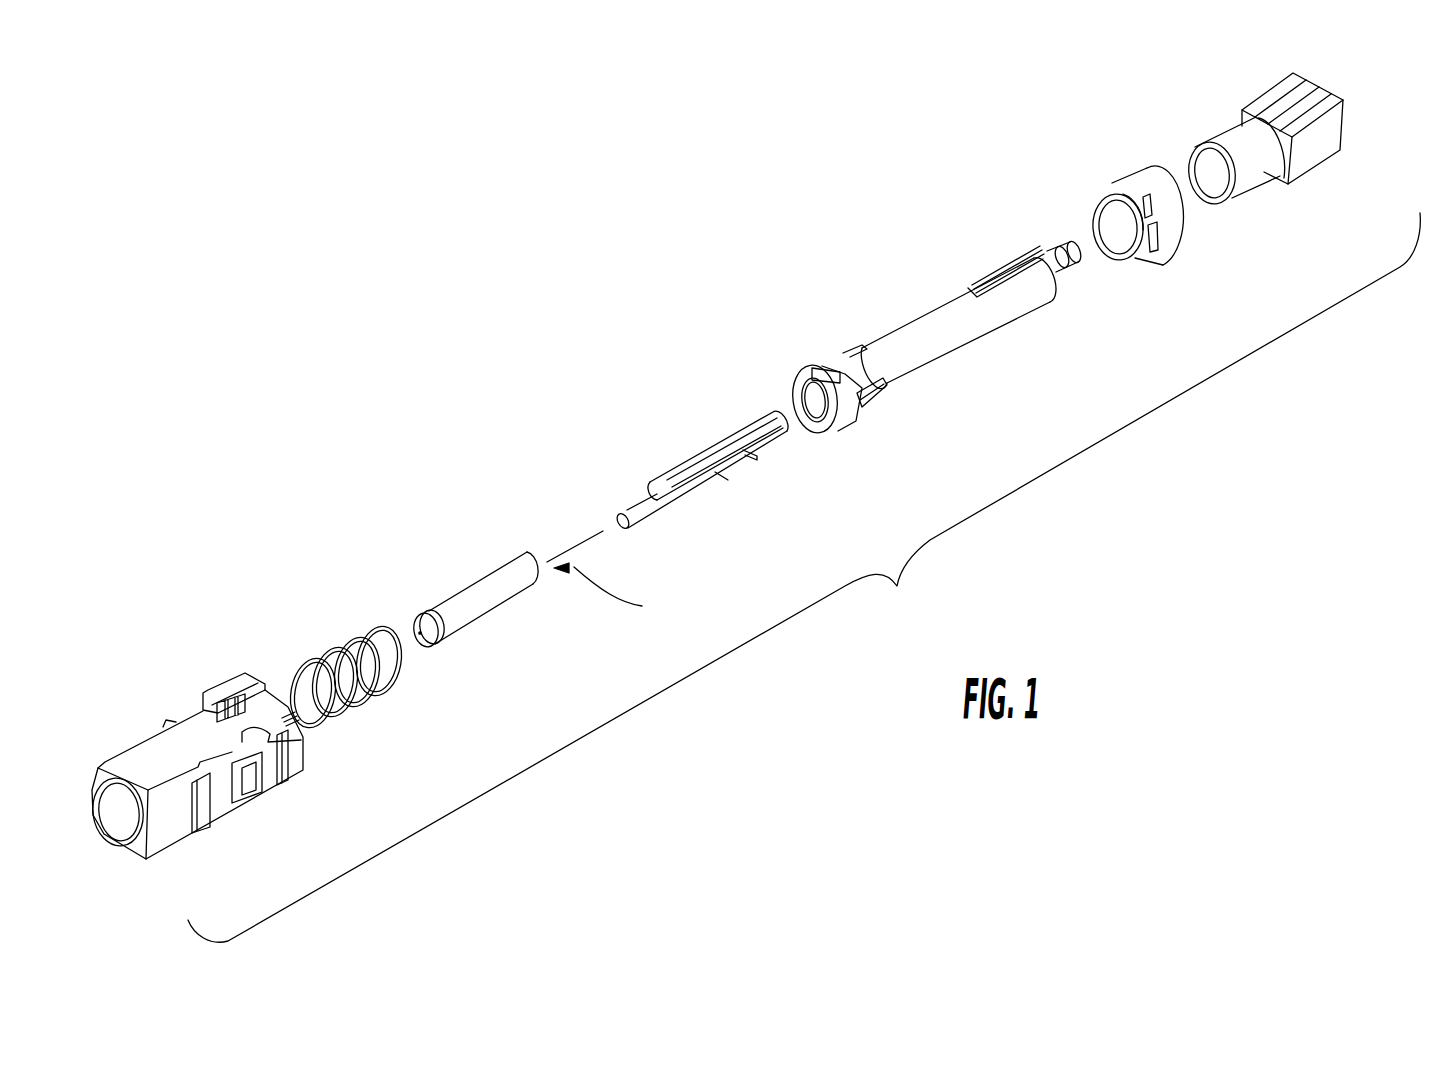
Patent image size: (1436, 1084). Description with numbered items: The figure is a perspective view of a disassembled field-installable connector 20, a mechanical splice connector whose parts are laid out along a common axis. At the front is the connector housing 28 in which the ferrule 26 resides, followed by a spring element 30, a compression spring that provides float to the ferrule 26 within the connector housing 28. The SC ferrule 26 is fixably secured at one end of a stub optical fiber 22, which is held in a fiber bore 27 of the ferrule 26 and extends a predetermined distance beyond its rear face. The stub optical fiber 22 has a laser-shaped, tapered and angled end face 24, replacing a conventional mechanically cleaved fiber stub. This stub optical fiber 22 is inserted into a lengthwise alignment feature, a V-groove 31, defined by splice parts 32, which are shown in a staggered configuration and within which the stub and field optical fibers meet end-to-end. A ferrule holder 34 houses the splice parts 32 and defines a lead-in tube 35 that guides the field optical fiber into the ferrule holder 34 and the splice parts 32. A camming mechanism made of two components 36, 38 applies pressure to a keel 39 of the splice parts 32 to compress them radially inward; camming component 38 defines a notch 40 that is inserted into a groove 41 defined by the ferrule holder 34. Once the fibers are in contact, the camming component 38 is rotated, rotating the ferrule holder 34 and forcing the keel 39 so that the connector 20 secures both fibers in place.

The field-installable connector 20 is at (804, 577).
The stub optical fiber 22 is at (575, 543).
The tapered and angled end face 24 is at (601, 515).
The ferrule 26 is at (480, 600).
The fiber bore 27 is at (612, 594).
The connector housing 28 is at (168, 828).
The spring element 30 is at (348, 727).
The V-groove 31 is at (625, 500).
The splice parts 32 is at (645, 518).
The ferrule holder 34 is at (920, 350).
The lead-in tube 35 is at (1058, 255).
The camming mechanism component 36 is at (1173, 230).
The camming mechanism component 38 is at (1307, 153).
The keel 39 is at (693, 495).
The notch 40 is at (1205, 150).
The groove 41 is at (833, 370).